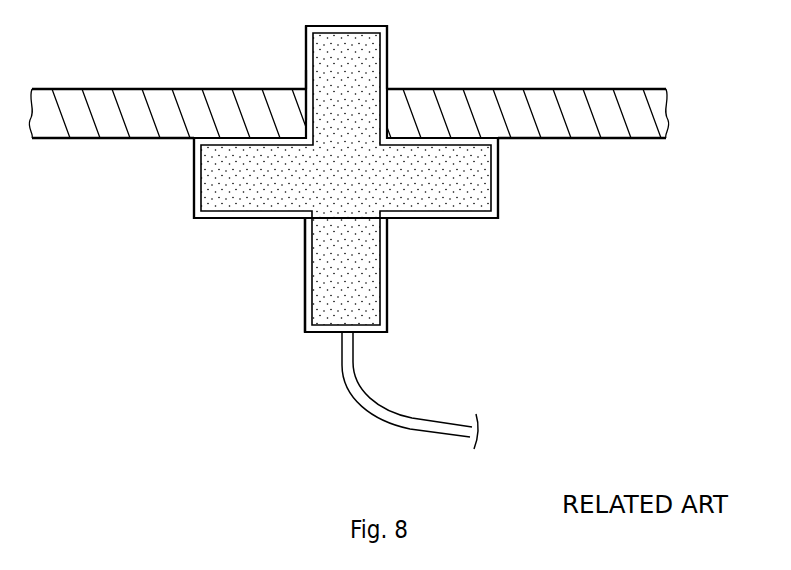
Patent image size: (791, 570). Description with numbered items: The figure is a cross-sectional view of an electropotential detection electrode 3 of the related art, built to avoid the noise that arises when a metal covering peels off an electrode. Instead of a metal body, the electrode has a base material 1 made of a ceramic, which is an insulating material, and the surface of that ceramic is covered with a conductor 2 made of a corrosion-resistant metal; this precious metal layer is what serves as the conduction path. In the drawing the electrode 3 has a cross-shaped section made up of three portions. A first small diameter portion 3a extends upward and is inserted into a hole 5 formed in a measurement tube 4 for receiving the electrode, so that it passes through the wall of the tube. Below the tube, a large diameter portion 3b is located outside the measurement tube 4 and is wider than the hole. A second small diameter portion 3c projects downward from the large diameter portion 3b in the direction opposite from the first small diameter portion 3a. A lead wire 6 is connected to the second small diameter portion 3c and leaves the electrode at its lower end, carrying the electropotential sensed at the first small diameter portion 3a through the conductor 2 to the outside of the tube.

The base material 1 is at (261, 192).
The conductor 2 is at (305, 272).
The electropotential detection electrode 3 is at (466, 317).
The first small diameter portion 3a is at (388, 42).
The large diameter portion 3b is at (498, 200).
The second small diameter portion 3c is at (387, 280).
The measurement tube 4 is at (629, 88).
The hole 5 is at (314, 110).
The lead wire 6 is at (367, 408).